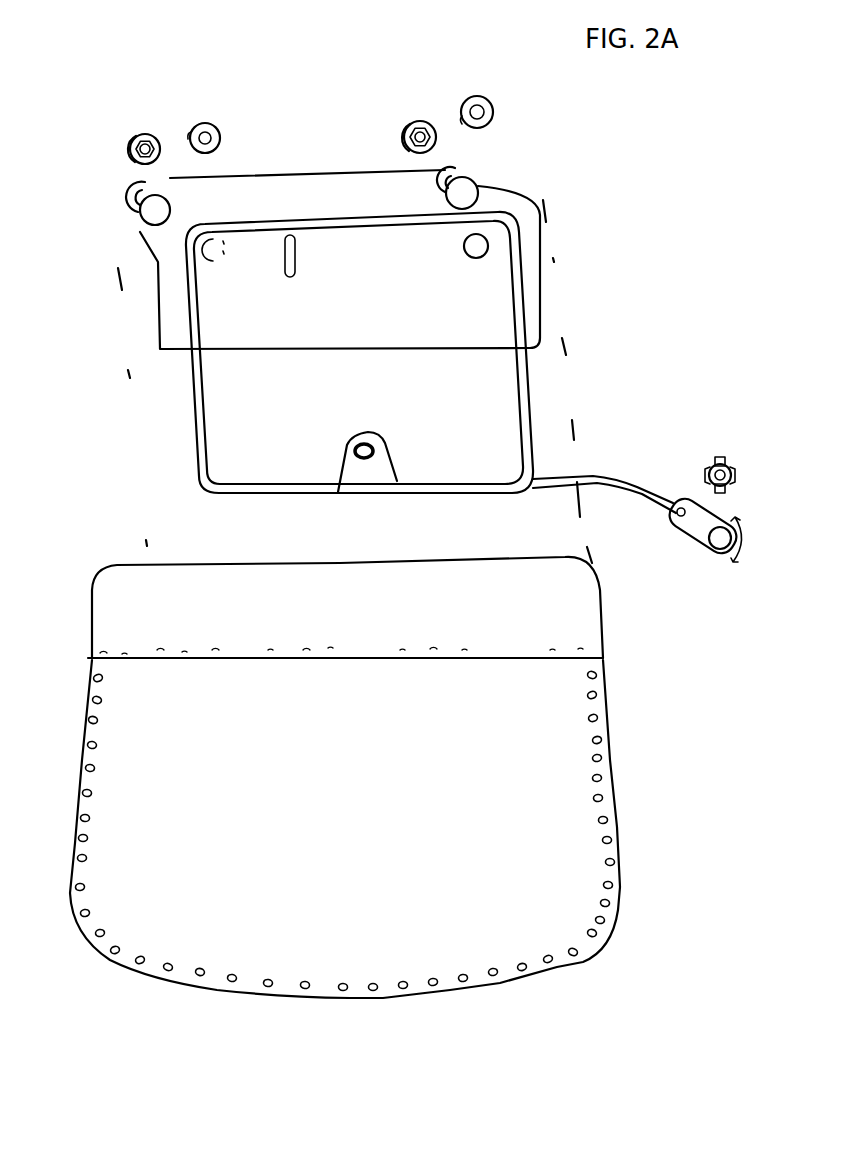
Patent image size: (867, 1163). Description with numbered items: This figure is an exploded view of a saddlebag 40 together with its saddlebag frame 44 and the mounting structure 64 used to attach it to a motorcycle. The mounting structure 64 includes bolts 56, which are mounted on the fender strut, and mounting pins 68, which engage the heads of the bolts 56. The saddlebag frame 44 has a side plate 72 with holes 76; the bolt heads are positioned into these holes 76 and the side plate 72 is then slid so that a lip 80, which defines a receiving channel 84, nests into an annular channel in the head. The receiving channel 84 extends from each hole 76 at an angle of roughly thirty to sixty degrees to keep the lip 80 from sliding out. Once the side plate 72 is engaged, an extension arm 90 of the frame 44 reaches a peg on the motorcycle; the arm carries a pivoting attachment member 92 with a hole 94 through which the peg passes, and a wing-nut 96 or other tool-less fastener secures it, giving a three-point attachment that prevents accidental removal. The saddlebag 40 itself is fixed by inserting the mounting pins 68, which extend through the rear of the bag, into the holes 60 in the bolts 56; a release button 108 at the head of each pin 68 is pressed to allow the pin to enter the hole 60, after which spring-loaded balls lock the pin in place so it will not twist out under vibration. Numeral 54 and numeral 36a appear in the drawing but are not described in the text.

The frame portion 36a is at (127, 152).
The saddlebag 40 is at (352, 803).
The saddlebag frame 44 is at (517, 327).
The fastener assembly 54 is at (296, 126).
The bolts 56 is at (143, 135).
The holes in the bolts 60 is at (150, 143).
The mounting structure 64 is at (362, 88).
The mounting pins 68 is at (220, 138).
The side plate 72 is at (508, 193).
The holes in the side plate 76 is at (165, 193).
The lip 80 is at (137, 213).
The receiving channel 84 is at (305, 191).
The extension arm 90 is at (638, 487).
The pivoting attachment member 92 is at (708, 511).
The hole in the attachment member 94 is at (721, 553).
The wing-nut 96 is at (727, 463).
The release button 108 is at (205, 136).